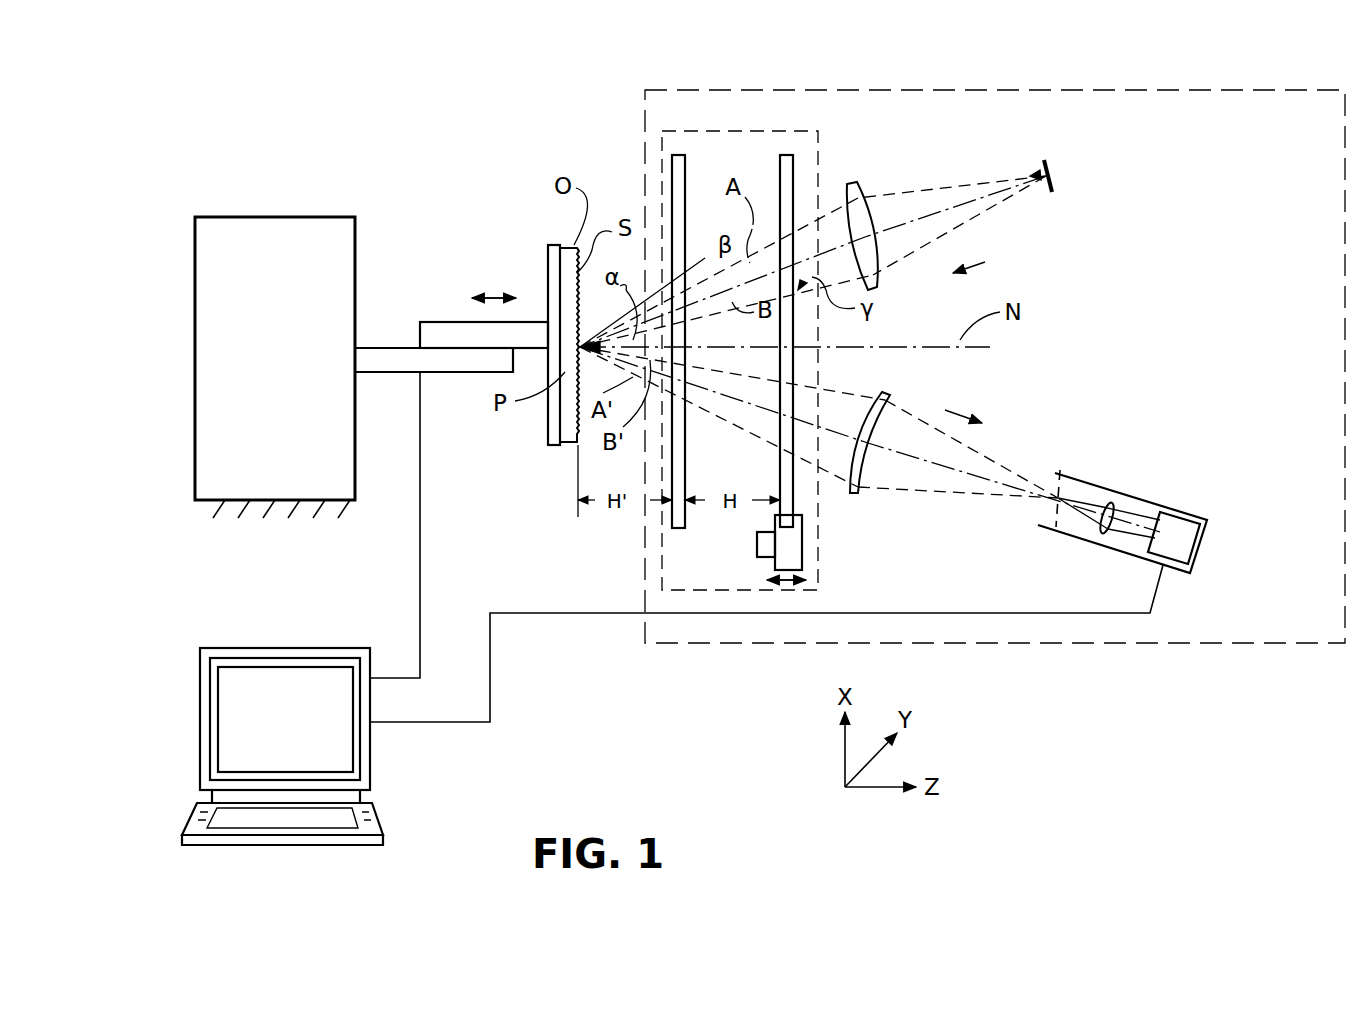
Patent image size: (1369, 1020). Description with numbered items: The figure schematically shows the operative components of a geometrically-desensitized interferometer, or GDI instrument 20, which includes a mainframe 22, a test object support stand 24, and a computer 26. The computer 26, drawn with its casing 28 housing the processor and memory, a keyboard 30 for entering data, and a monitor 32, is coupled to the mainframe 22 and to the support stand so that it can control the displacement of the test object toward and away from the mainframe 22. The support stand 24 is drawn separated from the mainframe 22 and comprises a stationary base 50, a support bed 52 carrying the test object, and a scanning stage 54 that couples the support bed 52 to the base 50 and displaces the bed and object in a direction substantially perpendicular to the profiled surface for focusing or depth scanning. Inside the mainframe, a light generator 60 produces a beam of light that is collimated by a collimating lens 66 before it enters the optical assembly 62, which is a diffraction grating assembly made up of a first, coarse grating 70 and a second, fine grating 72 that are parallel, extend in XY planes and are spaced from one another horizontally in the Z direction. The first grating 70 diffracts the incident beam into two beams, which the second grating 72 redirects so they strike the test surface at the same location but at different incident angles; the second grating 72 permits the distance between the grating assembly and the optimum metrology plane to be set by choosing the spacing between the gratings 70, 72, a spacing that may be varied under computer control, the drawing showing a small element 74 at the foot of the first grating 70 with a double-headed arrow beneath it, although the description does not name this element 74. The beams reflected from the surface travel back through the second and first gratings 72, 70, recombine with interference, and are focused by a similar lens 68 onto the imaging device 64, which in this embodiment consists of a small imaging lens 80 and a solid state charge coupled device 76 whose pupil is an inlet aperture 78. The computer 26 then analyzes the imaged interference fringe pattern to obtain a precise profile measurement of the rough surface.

The GDI instrument 20 is at (1120, 78).
The mainframe 22 is at (920, 88).
The test object support stand 24 is at (383, 346).
The computer 26 is at (251, 728).
The casing 28 is at (210, 798).
The keyboard 30 is at (185, 838).
The monitor 32 is at (205, 692).
The stationary base 50 is at (288, 216).
The support bed 52 is at (548, 445).
The scanning stage 54 is at (448, 320).
The light generator 60 is at (1056, 166).
The optical assembly 62 is at (820, 135).
The imaging device 64 is at (1178, 513).
The collimating lens 66 is at (855, 185).
The lens 68 is at (888, 393).
The first grating 70 is at (800, 505).
The second grating 72 is at (683, 530).
The slit actuator 74 is at (802, 555).
The charge coupled device 76 is at (1198, 540).
The inlet aperture 78 is at (1082, 478).
The imaging lens 80 is at (1117, 503).